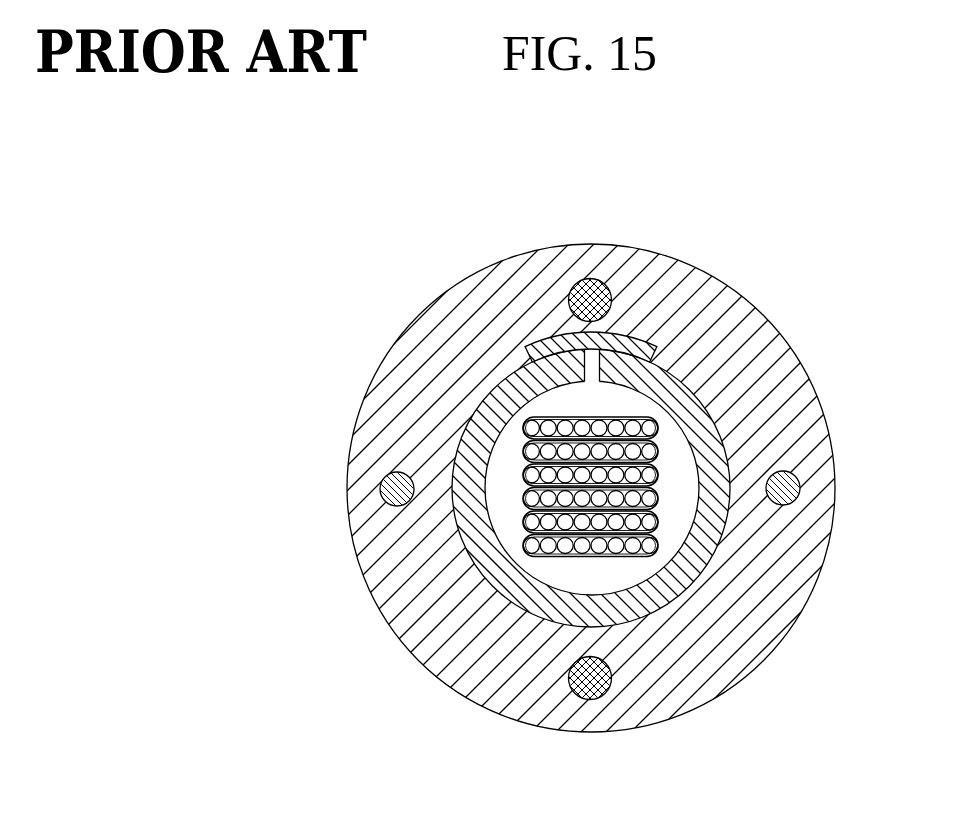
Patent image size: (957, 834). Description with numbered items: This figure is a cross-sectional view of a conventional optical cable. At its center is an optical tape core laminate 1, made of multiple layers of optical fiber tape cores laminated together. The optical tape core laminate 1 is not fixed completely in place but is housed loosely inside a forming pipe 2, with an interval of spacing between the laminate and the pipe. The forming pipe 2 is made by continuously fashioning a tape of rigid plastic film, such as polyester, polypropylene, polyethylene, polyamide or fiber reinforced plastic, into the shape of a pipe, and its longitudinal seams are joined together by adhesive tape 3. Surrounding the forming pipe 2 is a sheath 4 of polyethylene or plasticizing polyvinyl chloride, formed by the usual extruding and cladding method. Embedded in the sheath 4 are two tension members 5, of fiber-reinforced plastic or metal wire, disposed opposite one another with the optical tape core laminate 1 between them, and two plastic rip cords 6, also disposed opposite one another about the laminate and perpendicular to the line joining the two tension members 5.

The optical tape core laminate 1 is at (680, 516).
The forming pipe 2 is at (692, 386).
The adhesive tape 3 is at (630, 337).
The sheath 4 is at (808, 552).
The tension member 5 is at (577, 284).
The rip cord 6 is at (392, 487).